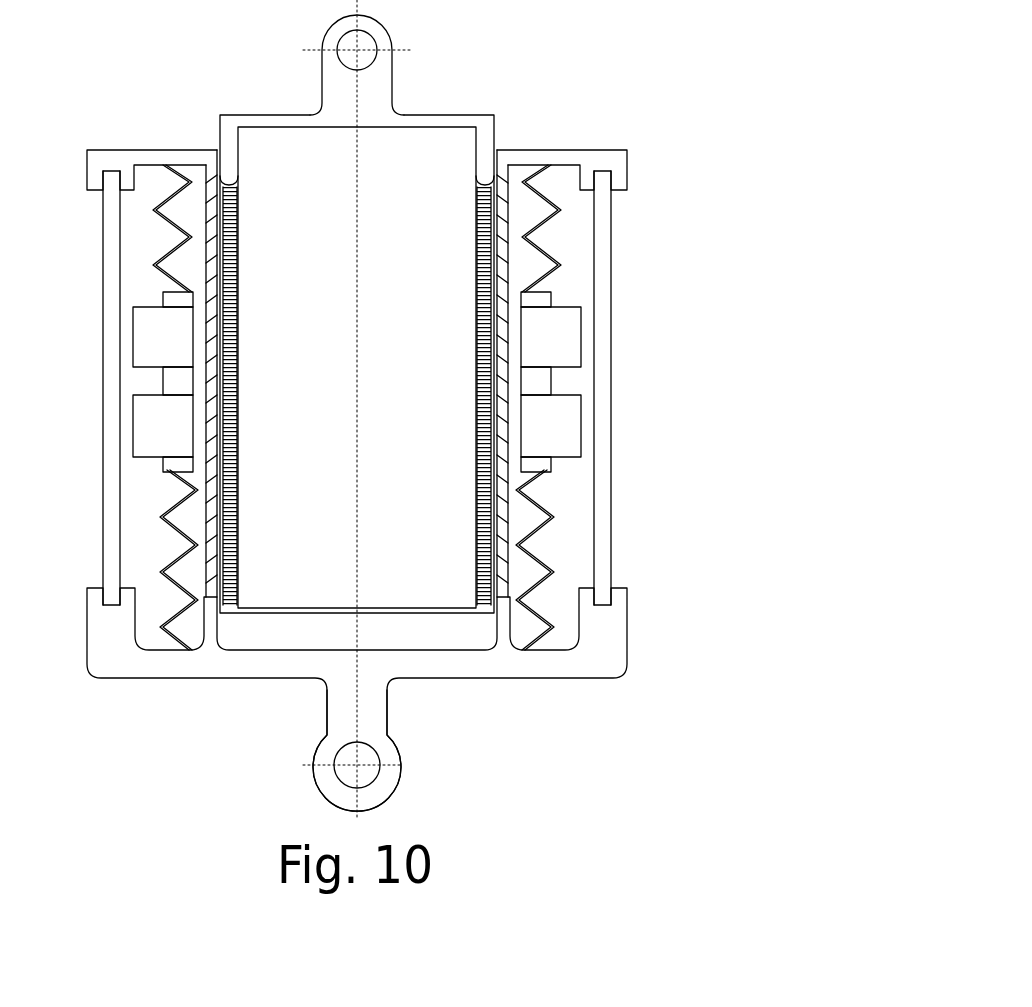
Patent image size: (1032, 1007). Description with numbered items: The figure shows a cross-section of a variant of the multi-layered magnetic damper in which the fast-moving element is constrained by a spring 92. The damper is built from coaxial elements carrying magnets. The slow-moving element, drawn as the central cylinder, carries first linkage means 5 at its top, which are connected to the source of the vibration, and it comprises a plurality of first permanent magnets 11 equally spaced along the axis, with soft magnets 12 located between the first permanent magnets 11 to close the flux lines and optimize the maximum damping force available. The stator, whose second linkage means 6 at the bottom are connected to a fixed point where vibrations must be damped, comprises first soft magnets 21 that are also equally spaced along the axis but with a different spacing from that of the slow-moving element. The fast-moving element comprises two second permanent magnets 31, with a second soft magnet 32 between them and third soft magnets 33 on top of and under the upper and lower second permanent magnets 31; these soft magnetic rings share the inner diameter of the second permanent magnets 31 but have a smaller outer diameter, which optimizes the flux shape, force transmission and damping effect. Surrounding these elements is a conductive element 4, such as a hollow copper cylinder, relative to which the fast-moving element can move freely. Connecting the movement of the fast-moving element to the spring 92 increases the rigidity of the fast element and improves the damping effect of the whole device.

The conductive element 4 is at (631, 314).
The first linkage means 5 is at (411, 71).
The second linkage means 6 is at (419, 770).
The first permanent magnets 11 is at (511, 205).
The soft magnets 12 is at (509, 179).
The first soft magnets 21 is at (527, 228).
The second permanent magnets 31 is at (602, 350).
The second soft magnet 32 is at (571, 390).
The third soft magnets 33 is at (570, 475).
The spring 92 is at (581, 264).